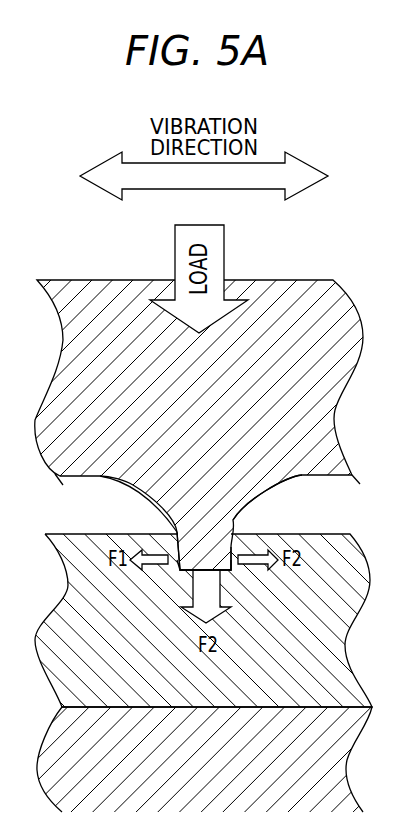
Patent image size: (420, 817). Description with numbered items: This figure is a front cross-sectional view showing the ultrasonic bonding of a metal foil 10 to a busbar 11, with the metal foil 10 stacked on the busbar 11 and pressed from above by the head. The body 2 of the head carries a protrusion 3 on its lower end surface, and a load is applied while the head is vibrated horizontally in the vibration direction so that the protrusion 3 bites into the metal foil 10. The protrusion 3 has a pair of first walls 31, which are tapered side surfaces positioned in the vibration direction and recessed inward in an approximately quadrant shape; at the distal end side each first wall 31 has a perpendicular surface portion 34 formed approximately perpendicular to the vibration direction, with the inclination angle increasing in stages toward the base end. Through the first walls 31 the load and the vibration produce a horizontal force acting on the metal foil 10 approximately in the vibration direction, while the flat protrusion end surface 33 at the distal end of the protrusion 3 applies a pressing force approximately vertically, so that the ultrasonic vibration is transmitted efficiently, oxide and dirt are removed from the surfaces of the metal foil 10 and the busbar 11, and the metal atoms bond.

The body 2 is at (322, 434).
The protrusion 3 is at (177, 578).
The first wall 31 is at (148, 503).
The protrusion end surface 33 is at (222, 573).
The perpendicular surface portion 34 is at (178, 571).
The metal foil 10 is at (68, 601).
The busbar 11 is at (57, 759).